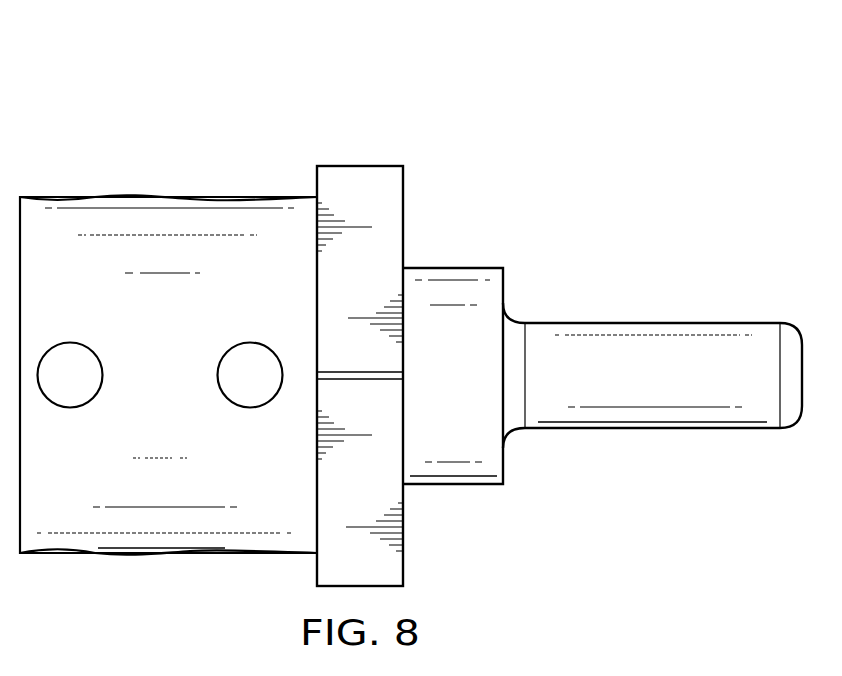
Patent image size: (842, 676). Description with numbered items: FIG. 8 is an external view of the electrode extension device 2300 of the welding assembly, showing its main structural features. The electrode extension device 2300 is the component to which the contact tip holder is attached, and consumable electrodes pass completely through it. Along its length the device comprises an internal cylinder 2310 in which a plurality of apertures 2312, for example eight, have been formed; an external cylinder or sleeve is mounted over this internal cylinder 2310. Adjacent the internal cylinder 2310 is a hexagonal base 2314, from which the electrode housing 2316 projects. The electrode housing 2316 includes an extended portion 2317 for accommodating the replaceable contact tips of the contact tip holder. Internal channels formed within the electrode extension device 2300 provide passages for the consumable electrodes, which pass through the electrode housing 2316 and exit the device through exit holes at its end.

The electrode extension device 2300 is at (515, 70).
The internal cylinder 2310 is at (160, 195).
The apertures 2312 is at (82, 403).
The hexagonal base 2314 is at (360, 165).
The extended portion 2317 is at (452, 267).
The electrode housing 2316 is at (652, 322).